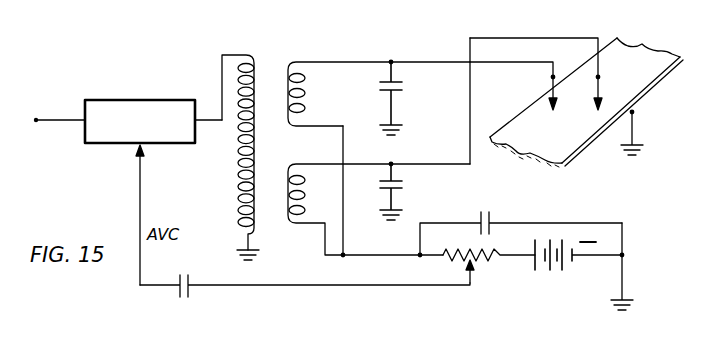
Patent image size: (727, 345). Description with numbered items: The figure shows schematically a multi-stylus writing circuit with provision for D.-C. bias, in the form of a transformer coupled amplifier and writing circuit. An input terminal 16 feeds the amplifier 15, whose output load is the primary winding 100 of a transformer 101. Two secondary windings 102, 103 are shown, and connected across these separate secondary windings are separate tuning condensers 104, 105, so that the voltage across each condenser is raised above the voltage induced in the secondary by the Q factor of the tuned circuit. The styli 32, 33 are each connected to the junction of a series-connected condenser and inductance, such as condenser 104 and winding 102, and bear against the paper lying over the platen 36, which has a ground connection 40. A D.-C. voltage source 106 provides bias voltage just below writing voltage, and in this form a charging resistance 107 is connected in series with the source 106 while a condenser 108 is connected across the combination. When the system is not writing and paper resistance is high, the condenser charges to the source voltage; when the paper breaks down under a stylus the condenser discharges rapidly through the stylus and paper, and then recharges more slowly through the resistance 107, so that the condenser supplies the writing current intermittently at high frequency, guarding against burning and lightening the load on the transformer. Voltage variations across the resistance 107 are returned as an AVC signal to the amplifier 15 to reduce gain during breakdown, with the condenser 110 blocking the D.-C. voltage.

The amplifier 15 is at (158, 100).
The input terminal 16 is at (37, 118).
The stylus 32 is at (551, 84).
The stylus 33 is at (598, 92).
The plate 36 is at (558, 148).
The platen 40 is at (618, 118).
The primary winding 100 is at (243, 172).
The transformer 101 is at (277, 100).
The secondary winding 102 is at (305, 112).
The secondary winding 103 is at (376, 209).
The tuning condenser 104 is at (402, 88).
The tuning condenser 105 is at (403, 184).
The D.-C. voltage source 106 is at (558, 266).
The charging resistance 107 is at (498, 258).
The condenser 108 is at (521, 222).
The condenser 110 is at (190, 297).